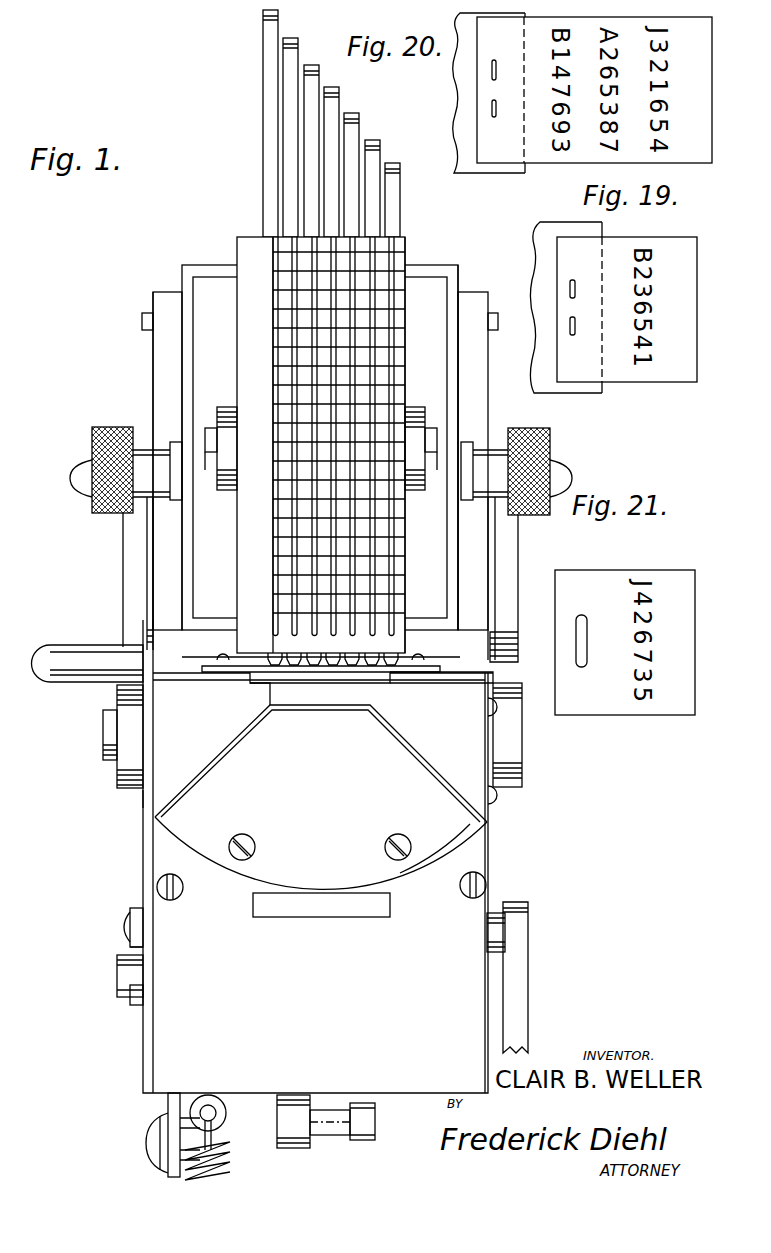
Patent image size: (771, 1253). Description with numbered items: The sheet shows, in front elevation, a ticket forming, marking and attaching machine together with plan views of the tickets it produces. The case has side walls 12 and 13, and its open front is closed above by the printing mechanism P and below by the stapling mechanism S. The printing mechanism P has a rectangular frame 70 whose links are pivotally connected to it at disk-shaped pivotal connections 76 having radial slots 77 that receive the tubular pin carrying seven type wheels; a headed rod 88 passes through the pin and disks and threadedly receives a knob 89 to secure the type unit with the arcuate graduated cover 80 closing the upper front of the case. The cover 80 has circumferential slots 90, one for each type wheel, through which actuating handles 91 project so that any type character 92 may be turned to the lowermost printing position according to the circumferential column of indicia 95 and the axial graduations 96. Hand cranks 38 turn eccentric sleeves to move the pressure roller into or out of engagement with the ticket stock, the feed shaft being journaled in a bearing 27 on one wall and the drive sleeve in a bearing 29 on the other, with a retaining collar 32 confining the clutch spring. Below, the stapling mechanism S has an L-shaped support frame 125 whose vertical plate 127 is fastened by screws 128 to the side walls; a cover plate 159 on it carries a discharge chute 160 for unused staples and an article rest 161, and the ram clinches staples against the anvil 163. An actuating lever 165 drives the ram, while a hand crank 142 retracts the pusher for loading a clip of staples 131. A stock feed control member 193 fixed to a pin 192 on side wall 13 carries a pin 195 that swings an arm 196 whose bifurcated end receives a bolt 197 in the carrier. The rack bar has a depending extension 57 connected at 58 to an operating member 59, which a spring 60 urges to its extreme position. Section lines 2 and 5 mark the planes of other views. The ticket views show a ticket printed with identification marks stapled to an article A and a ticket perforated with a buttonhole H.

In FIG. 1, the section line 5- 5 is at (323, 5).
In FIG. 1, the side wall 12 is at (193, 165).
In FIG. 1, the section line 2- 2 is at (462, 190).
In FIG. 1, the actuating handles 91 is at (372, 140).
In FIG. 1, the rectangular frame 70 is at (177, 272).
In FIG. 1, the side wall 13 is at (160, 371).
In FIG. 1, the printing mechanism P is at (271, 438).
In FIG. 1, the circumferential column of indicia 95 is at (250, 355).
In FIG. 1, the circumferential slots 90 is at (370, 590).
In FIG. 1, the graduations 96 is at (404, 356).
In FIG. 1, the indicia-bearing cover 80 is at (402, 258).
In FIG. 1, the radial slots 77 is at (212, 432).
In FIG. 1, the pivotal connections 76 is at (438, 468).
In FIG. 1, the headed rod 88 is at (92, 497).
In FIG. 1, the knob 89 is at (550, 447).
In FIG. 1, the hand cranks 38 is at (127, 561).
In FIG. 1, the type character 92 is at (285, 665).
In FIG. 1, the vertical plate 127 is at (318, 856).
In FIG. 1, the anvil 163 is at (380, 683).
In FIG. 1, the article rest 161 is at (290, 698).
In FIG. 1, the cover plate 159 is at (321, 797).
In FIG. 1, the stapling mechanism S is at (481, 857).
In FIG. 1, the discharge chute 160 is at (362, 915).
In FIG. 1, the screws 128 is at (158, 884).
In FIG. 1, the stock feed control member 193 is at (140, 700).
In FIG. 1, the retaining collar 32 is at (107, 755).
In FIG. 1, the bearing 29 is at (130, 790).
In FIG. 1, the pin 192 is at (128, 925).
In FIG. 1, the arm 196 is at (135, 950).
In FIG. 1, the bolt 197 is at (118, 972).
In FIG. 1, the pin 195 is at (136, 990).
In FIG. 1, the bearing 27 is at (505, 790).
In FIG. 1, the L-shaped support frame 125 is at (482, 982).
In FIG. 1, the hand crank 142 is at (520, 1010).
In FIG. 1, the depending extension 57 is at (168, 1102).
In FIG. 1, the connection 58 is at (150, 1130).
In FIG. 1, the operating member 59 is at (175, 1172).
In FIG. 1, the spring 60 is at (232, 1168).
In FIG. 1, the actuating lever 165 is at (280, 1138).
In FIG. 20, the article A is at (492, 108).
In FIG. 19, the article A is at (532, 253).
In FIG. 20, the clip of staples 131 is at (496, 112).
In FIG. 19, the clip of staples 131 is at (575, 327).
In FIG. 21, the buttonhole H is at (583, 660).